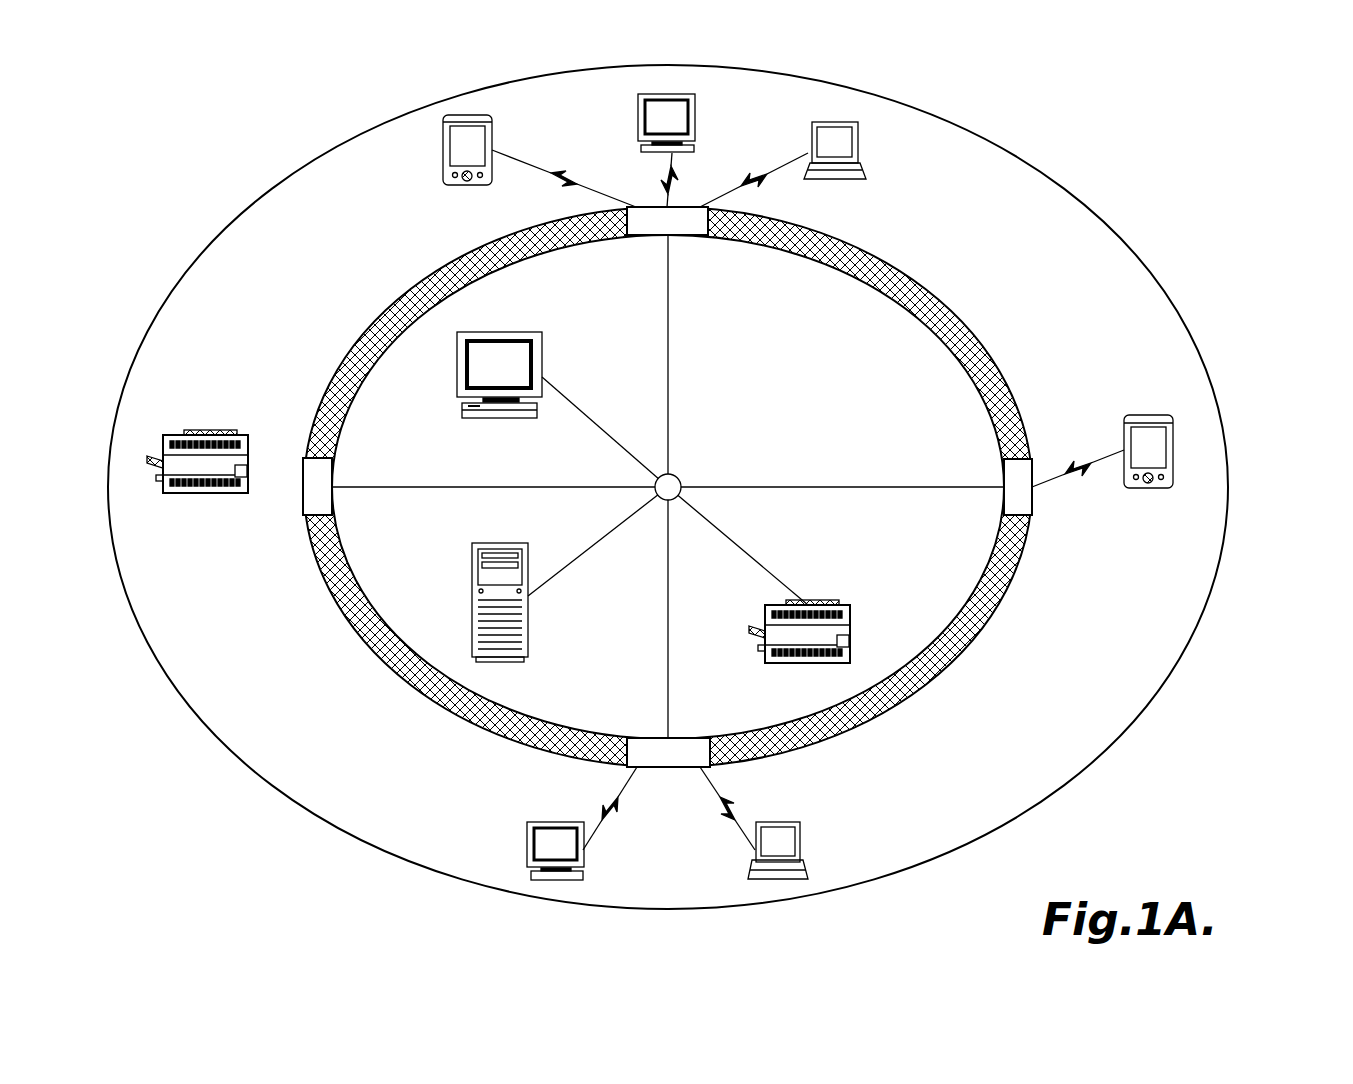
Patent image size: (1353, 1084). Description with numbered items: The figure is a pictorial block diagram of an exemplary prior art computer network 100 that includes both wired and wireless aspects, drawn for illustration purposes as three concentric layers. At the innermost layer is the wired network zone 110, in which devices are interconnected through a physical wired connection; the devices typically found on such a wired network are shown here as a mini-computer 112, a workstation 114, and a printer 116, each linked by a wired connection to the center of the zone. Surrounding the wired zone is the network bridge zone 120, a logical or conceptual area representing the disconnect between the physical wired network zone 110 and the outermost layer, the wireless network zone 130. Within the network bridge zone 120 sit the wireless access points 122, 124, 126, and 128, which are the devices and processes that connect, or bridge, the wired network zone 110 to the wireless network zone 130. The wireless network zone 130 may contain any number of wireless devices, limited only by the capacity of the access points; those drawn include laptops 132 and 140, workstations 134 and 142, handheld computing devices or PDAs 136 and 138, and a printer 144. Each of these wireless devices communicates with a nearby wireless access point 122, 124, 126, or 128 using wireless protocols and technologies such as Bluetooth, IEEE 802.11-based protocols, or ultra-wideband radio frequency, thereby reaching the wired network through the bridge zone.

The computer network 100 is at (178, 130).
The wired network zone 110 is at (863, 318).
The network bridge zone 120 is at (982, 340).
The wireless network zone 130 is at (1115, 347).
The mini-computer 112 is at (500, 543).
The workstation 114 is at (522, 332).
The printer 116 is at (820, 605).
The wireless access point 122 is at (680, 237).
The wireless access point 124 is at (1032, 500).
The wireless access point 126 is at (630, 740).
The wireless access point 128 is at (332, 500).
The laptop 132 is at (863, 143).
The workstation 134 is at (697, 118).
The PDA 136 is at (443, 150).
The PDA 138 is at (1130, 417).
The laptop 140 is at (808, 850).
The workstation 142 is at (527, 850).
The printer 144 is at (215, 435).